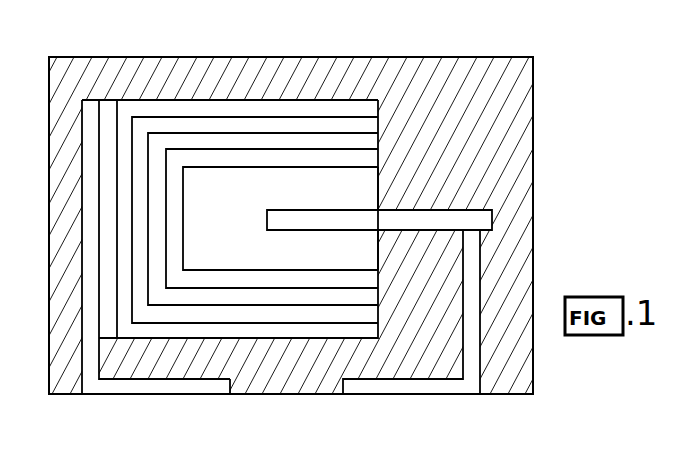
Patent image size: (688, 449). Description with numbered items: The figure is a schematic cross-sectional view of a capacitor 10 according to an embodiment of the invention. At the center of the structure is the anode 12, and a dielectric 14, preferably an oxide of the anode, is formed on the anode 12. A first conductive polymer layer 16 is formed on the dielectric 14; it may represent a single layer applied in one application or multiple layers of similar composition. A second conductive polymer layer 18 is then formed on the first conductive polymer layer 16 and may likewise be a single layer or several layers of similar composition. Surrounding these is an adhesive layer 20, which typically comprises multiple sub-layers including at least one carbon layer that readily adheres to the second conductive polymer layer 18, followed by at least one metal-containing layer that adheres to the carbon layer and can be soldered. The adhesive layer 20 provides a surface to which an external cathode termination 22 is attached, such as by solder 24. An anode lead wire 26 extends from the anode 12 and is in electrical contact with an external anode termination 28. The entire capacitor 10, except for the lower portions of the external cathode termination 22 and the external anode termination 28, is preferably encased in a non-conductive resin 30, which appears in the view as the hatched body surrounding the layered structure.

The capacitor 10 is at (575, 70).
The anode 12 is at (239, 238).
The dielectric 14 is at (312, 160).
The first conductive polymer layer 16 is at (262, 143).
The second conductive polymer layer 18 is at (205, 123).
The adhesive layer 20 is at (142, 107).
The external cathode termination 22 is at (128, 386).
The solder 24 is at (108, 227).
The anode lead wire 26 is at (467, 217).
The external anode termination 28 is at (420, 387).
The non-conductive resin 30 is at (483, 125).